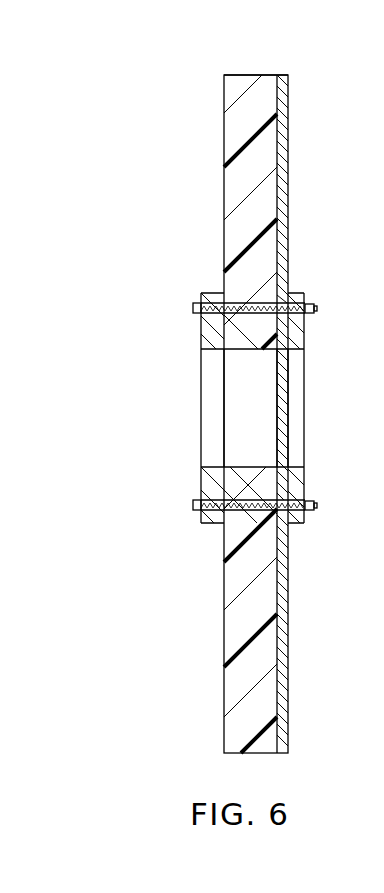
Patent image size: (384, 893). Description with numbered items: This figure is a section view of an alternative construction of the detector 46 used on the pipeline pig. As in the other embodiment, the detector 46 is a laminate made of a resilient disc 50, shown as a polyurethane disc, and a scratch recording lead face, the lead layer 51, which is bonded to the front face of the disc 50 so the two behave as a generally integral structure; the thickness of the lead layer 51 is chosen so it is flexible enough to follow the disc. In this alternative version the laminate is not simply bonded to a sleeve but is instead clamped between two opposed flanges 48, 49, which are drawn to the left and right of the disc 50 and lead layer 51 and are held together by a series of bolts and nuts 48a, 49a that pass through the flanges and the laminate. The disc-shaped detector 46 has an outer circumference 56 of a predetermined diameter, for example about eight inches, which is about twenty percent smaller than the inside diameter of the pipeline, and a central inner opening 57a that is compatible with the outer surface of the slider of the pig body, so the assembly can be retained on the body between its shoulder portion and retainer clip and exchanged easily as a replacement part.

The detector 46 is at (207, 183).
The flange 48 is at (298, 331).
The bolts 48a is at (262, 498).
The flange 49 is at (200, 480).
The nuts 49a is at (313, 313).
The polyurethane disc 50 is at (236, 246).
The lead layer 51 is at (289, 236).
The outer circumference 56 is at (248, 75).
The inner central opening 57a is at (250, 350).